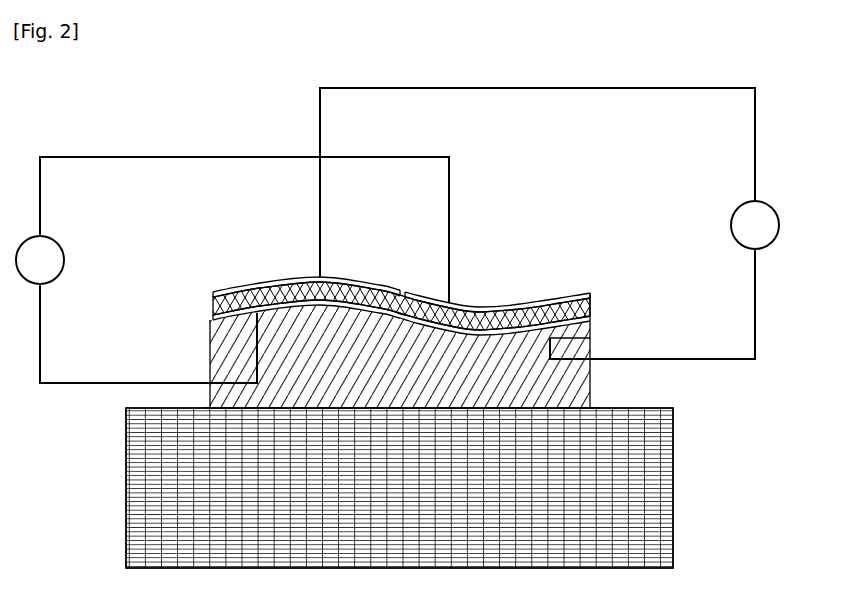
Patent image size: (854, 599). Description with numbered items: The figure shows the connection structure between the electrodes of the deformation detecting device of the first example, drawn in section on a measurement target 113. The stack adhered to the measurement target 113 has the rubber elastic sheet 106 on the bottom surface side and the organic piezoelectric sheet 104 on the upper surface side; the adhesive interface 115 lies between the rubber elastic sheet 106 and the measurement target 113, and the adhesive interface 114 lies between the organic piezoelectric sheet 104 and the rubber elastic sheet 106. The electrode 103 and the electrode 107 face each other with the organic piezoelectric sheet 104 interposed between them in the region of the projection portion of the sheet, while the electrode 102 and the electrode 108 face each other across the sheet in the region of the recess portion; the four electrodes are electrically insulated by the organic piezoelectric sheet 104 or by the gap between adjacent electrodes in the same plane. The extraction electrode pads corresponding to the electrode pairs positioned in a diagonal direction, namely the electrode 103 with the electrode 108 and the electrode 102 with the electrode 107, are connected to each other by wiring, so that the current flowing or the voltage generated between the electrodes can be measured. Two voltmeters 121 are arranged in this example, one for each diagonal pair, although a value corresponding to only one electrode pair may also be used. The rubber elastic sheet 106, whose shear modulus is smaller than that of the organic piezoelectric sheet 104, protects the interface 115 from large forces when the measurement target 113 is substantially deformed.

The electrode 102 is at (558, 300).
The electrode 103 is at (253, 280).
The organic piezoelectric sheet 104 is at (592, 302).
The rubber elastic sheet 106 is at (230, 363).
The electrode 107 is at (233, 328).
The electrode 108 is at (592, 340).
The measurement target 113 is at (135, 462).
The adhesive interface 114 is at (592, 317).
The adhesive interface 115 is at (593, 405).
The voltmeter 121 is at (66, 250).